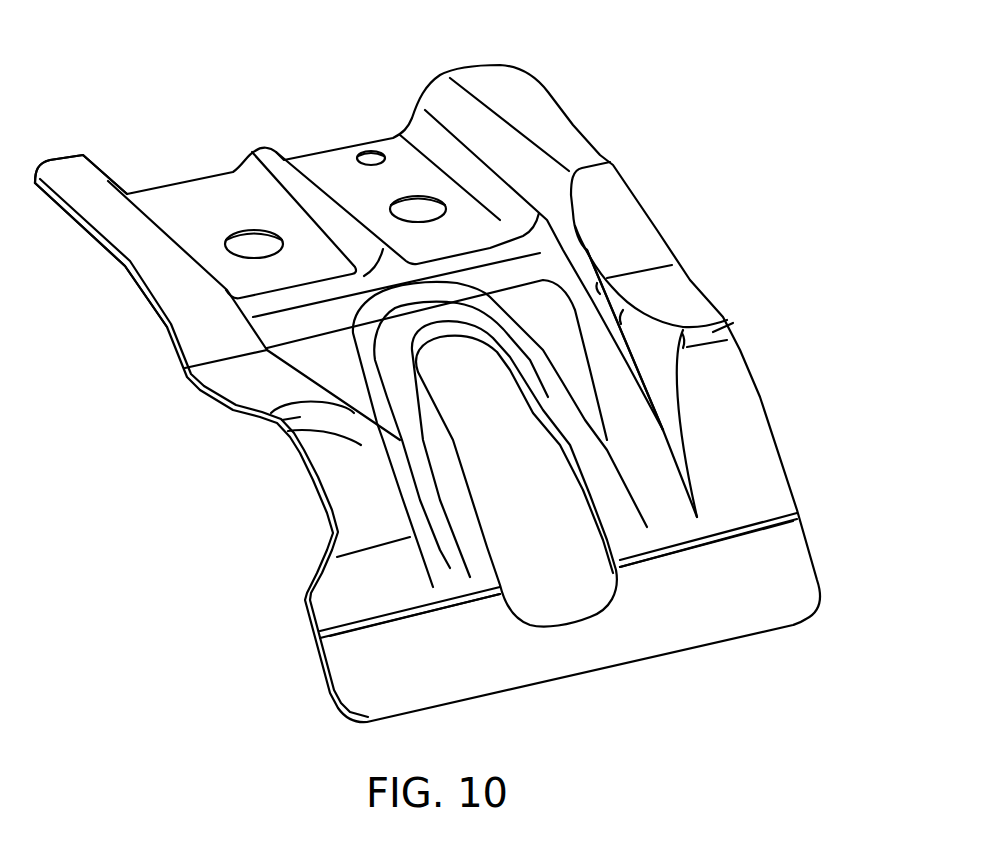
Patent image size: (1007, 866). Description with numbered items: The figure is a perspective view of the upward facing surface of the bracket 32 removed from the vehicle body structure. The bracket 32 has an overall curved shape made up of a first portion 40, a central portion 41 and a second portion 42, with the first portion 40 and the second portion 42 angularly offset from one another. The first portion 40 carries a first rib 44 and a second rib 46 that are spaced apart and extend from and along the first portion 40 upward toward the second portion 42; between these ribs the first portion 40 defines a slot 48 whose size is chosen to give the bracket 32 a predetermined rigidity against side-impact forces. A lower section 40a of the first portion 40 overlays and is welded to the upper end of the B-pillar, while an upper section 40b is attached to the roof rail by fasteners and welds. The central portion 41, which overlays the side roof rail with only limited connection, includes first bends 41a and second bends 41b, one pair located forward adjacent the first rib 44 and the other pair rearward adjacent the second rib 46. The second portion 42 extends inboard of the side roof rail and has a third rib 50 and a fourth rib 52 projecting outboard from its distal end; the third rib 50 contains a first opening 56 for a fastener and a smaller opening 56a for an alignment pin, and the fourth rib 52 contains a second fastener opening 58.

The bracket 32 is at (693, 130).
The first portion 40 is at (750, 495).
The lower section 40a is at (748, 592).
The upper section 40b is at (535, 115).
The central portion 41 is at (672, 295).
The first bends 41a is at (640, 268).
The second bends 41b is at (723, 323).
The second portion 42 is at (93, 232).
The first rib 44 is at (638, 462).
The second rib 46 is at (423, 498).
The slot 48 is at (545, 410).
The third rib 50 is at (330, 170).
The fourth rib 52 is at (213, 197).
The first opening 56 is at (417, 220).
The smaller opening 56a is at (370, 153).
The second fastener opening 58 is at (255, 257).